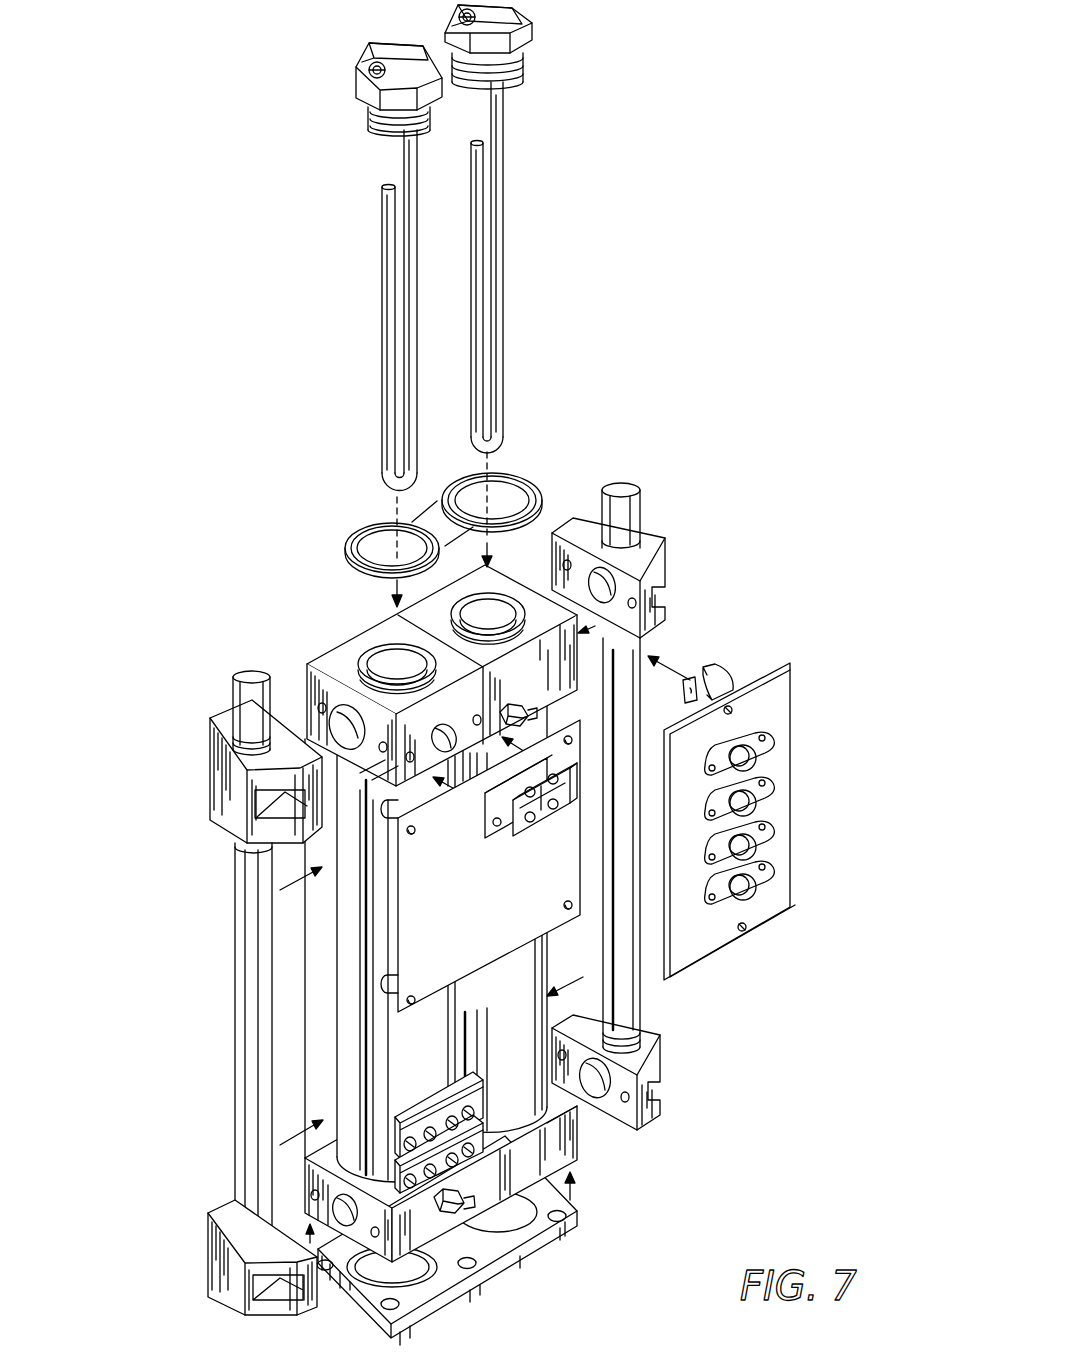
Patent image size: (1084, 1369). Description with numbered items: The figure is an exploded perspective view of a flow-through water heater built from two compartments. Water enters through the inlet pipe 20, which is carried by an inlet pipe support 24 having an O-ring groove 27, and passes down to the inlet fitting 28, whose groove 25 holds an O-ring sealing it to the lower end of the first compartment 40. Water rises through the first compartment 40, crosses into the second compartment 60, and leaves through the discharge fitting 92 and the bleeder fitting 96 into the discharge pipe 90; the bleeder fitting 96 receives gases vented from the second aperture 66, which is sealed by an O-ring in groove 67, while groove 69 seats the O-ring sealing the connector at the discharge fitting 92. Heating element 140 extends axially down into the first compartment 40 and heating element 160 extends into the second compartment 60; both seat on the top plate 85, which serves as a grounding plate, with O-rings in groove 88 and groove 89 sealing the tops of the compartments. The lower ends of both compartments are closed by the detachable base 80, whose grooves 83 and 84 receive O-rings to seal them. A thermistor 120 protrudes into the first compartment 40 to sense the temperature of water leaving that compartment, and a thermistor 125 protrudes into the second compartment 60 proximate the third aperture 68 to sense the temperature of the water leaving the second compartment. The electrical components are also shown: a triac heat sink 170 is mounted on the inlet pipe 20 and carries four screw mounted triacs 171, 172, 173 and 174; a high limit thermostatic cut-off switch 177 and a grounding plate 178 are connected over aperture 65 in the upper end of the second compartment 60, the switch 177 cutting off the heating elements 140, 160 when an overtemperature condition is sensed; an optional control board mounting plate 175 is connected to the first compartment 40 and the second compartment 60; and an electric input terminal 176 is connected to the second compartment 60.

The heating element 140 is at (520, 35).
The heating element 160 is at (365, 88).
The groove 88 is at (490, 475).
The top plate 85 is at (528, 492).
The groove 89 is at (368, 528).
The inlet pipe support 24 is at (650, 547).
The O-ring groove 27 is at (587, 583).
The aperture 65 is at (443, 733).
The second aperture 66 is at (307, 720).
The groove 67 is at (345, 712).
The temperature sensor 120 is at (512, 708).
The inlet pipe 20 is at (625, 735).
The triac heat sink 170 is at (780, 708).
The triac 171 is at (750, 758).
The triac 172 is at (750, 803).
The triac 173 is at (750, 848).
The triac 174 is at (750, 887).
The bleeder fitting 96 is at (223, 742).
The discharge pipe 90 is at (250, 887).
The grounding plate 178 is at (495, 832).
The high limit thermostatic cut-off switch 177 is at (548, 817).
The control board mounting plate 175 is at (508, 905).
The second compartment 60 is at (418, 1045).
The first compartment 40 is at (523, 1045).
The inlet fitting 28 is at (647, 1050).
The groove 25 is at (602, 1093).
The electric input terminal 176 is at (403, 1133).
The third aperture 68 is at (338, 1200).
The groove 69 is at (337, 1213).
The discharge fitting 92 is at (208, 1255).
The groove 83 is at (527, 1233).
The base 80 is at (527, 1258).
The temperature sensor 125 is at (460, 1218).
The groove 84 is at (420, 1278).